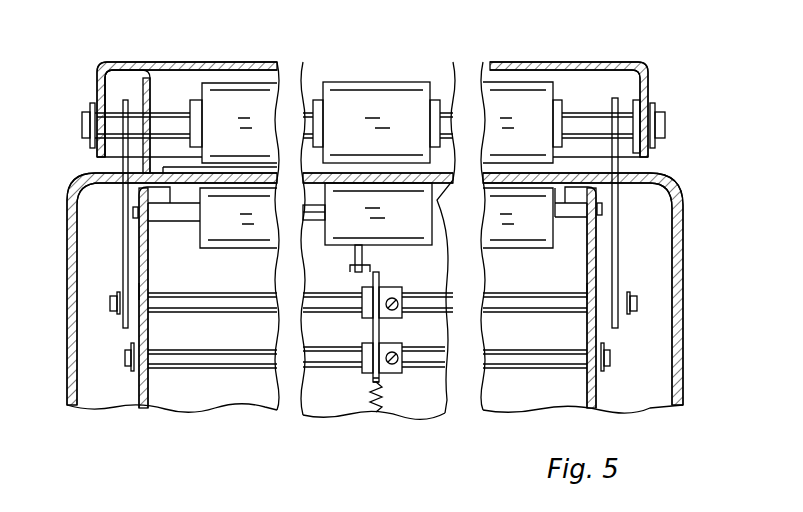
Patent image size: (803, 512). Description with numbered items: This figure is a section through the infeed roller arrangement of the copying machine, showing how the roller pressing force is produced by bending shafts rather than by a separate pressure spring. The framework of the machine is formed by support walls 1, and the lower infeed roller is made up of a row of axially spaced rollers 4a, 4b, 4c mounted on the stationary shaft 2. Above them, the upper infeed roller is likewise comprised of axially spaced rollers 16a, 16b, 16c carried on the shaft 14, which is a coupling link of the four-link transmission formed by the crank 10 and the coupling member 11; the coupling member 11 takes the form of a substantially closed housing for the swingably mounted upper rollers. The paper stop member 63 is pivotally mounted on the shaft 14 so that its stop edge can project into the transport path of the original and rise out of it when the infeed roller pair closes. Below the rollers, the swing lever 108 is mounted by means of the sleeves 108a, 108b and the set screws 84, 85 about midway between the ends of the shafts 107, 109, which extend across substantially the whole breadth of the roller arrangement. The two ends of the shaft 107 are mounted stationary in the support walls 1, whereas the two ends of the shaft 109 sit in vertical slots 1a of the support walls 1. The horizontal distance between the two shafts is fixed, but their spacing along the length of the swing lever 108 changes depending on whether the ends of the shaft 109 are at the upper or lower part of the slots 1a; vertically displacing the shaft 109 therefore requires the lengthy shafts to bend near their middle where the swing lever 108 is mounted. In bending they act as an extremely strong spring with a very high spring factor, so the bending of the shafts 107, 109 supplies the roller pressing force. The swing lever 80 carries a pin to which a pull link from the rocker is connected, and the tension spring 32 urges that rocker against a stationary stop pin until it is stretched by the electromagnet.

The support wall 1 is at (150, 394).
The vertical slot 1a is at (145, 290).
The shaft 2 is at (193, 212).
The lower infeed roller 4a is at (258, 225).
The lower infeed roller 4b is at (419, 240).
The lower infeed roller 4c is at (529, 237).
The crank 10 is at (125, 164).
The coupling member 11 is at (113, 77).
The shaft 14 is at (85, 128).
The upper infeed roller 16a is at (229, 101).
The upper infeed roller 16b is at (370, 100).
The upper infeed roller 16c is at (513, 102).
The tension spring 32 is at (372, 397).
The paper stop member 63 is at (131, 64).
The swing lever 80 is at (352, 268).
The set screw 84 is at (393, 297).
The set screw 85 is at (387, 373).
The shaft 107 is at (128, 360).
The swing lever 108 is at (371, 320).
The sleeve 108a is at (393, 312).
The sleeve 108b is at (394, 370).
The shaft 109 is at (115, 298).